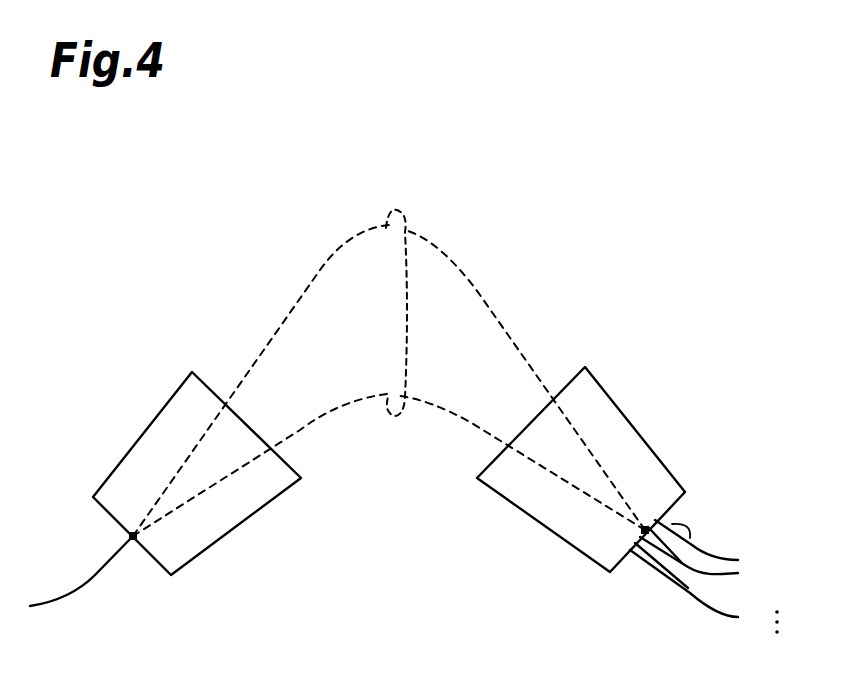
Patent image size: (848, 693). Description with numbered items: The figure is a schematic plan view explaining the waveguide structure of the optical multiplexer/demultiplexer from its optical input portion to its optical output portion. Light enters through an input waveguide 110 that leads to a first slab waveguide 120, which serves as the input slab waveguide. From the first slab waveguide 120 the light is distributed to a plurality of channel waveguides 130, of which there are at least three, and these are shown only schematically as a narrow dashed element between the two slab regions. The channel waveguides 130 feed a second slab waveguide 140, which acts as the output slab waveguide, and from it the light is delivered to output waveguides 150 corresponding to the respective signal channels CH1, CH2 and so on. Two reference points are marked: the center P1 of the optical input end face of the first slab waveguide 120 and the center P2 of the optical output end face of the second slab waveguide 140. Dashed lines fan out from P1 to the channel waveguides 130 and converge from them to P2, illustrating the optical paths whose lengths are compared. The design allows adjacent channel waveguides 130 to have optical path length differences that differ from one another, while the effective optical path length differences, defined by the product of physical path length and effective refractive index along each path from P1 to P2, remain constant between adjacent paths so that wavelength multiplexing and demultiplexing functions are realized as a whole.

The input waveguide 110 is at (90, 580).
The first slab waveguide 120 is at (217, 542).
The channel waveguides 130 is at (408, 213).
The second slab waveguide 140 is at (505, 502).
The output waveguides 150 is at (694, 584).
The center of optical input end face of the first slab waveguide P1 is at (133, 534).
The center of optical output end face of the second slab waveguide P2 is at (645, 530).
The signal channel CH1 is at (727, 544).
The signal channel CH2 is at (719, 565).